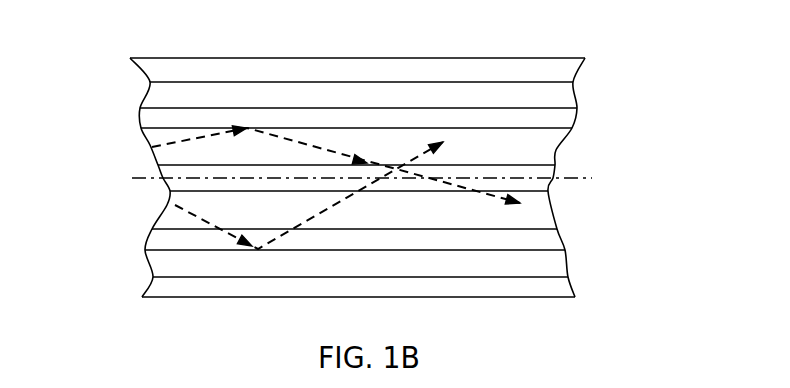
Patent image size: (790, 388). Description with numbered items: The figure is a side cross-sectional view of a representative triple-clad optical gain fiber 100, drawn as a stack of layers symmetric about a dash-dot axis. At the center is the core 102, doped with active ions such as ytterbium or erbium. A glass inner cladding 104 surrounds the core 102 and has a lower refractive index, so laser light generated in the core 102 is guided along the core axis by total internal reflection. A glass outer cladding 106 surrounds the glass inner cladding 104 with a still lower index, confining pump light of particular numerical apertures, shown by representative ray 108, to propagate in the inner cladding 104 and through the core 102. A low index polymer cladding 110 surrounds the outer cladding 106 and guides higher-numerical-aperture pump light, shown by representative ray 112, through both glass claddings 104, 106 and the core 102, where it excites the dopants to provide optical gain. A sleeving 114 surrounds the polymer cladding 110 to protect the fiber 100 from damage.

The triple-clad optical gain fiber 100 is at (630, 277).
The core 102 is at (556, 172).
The glass inner cladding 104 is at (537, 145).
The glass outer cladding 106 is at (547, 242).
The representative ray 108 is at (152, 147).
The low index polymer cladding 110 is at (560, 95).
The representative ray 112 is at (170, 203).
The sleeving 114 is at (460, 70).